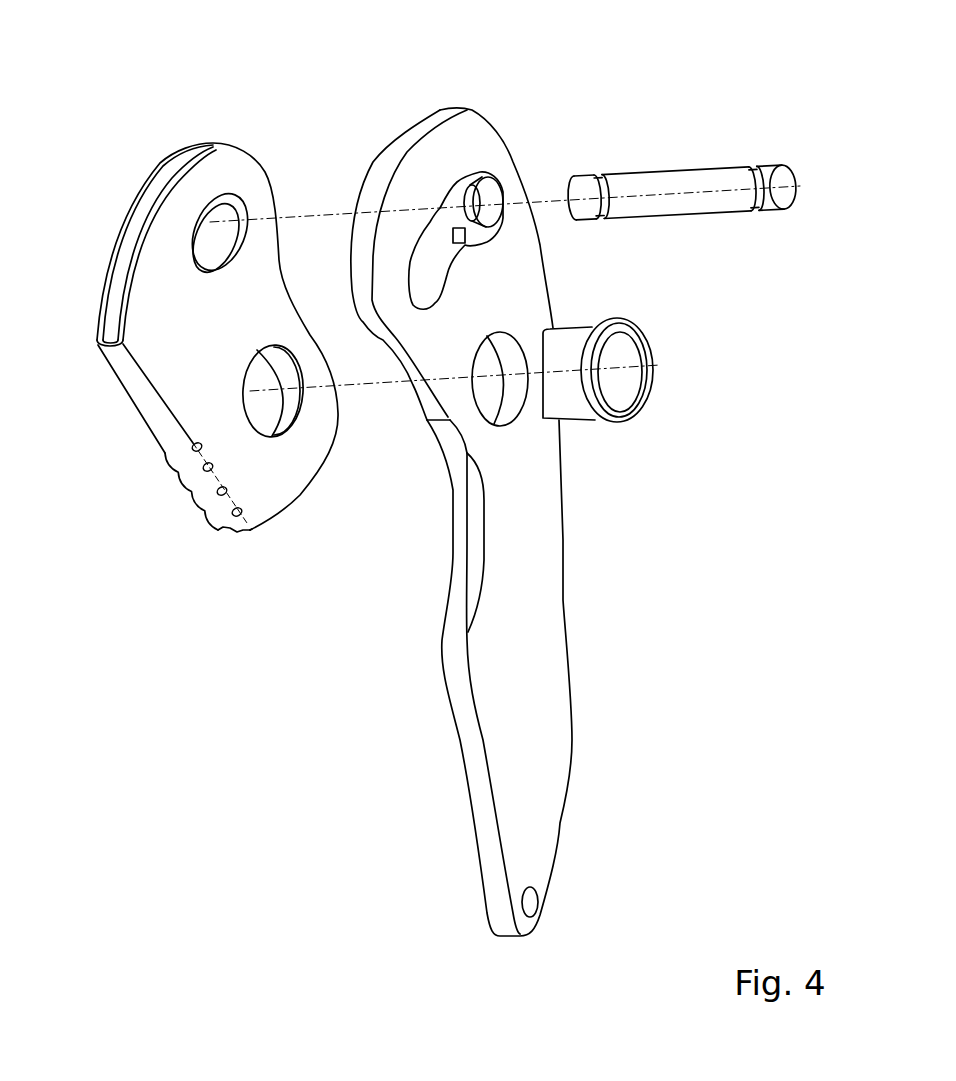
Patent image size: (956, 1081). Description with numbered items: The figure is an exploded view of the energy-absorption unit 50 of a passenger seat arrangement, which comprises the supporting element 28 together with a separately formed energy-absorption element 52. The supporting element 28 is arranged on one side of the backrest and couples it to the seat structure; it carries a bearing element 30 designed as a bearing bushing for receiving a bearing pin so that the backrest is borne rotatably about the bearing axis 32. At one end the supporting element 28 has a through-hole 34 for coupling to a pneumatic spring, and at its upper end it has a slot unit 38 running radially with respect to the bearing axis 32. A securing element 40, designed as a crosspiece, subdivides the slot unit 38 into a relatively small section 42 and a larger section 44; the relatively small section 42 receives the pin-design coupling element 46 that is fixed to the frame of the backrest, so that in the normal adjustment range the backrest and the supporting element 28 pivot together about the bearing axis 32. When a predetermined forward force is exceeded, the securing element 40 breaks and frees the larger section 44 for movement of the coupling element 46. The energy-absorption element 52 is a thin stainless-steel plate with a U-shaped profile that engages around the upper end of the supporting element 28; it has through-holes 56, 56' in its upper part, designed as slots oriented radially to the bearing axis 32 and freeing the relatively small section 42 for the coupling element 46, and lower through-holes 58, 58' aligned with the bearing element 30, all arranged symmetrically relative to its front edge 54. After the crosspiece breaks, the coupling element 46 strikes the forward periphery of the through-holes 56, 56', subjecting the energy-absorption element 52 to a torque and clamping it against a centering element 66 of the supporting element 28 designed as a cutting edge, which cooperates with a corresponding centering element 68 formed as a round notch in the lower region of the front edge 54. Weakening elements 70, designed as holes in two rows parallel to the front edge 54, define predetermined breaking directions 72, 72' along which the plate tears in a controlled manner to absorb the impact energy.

The supporting element 28 is at (513, 678).
The bearing element 30 is at (563, 400).
The bearing axis 32 is at (620, 370).
The through-hole 34 is at (530, 902).
The slot unit 38 is at (414, 195).
The securing element 40 is at (456, 195).
The relatively small section 42 is at (490, 192).
The larger section 44 is at (430, 260).
The coupling element 46 is at (657, 183).
The energy-absorption unit 50 is at (334, 745).
The energy-absorption element 52 is at (134, 168).
The front edge 54 is at (158, 425).
The through-hole 56 is at (248, 151).
The through-hole 56' is at (216, 151).
The through-hole 58 is at (297, 517).
The through-hole 58' is at (276, 520).
The centering element 66 is at (458, 607).
The centering element 68 is at (216, 531).
The weakening elements 70 is at (168, 455).
The predetermined breaking direction 72 is at (175, 616).
The predetermined breaking direction 72' is at (225, 627).